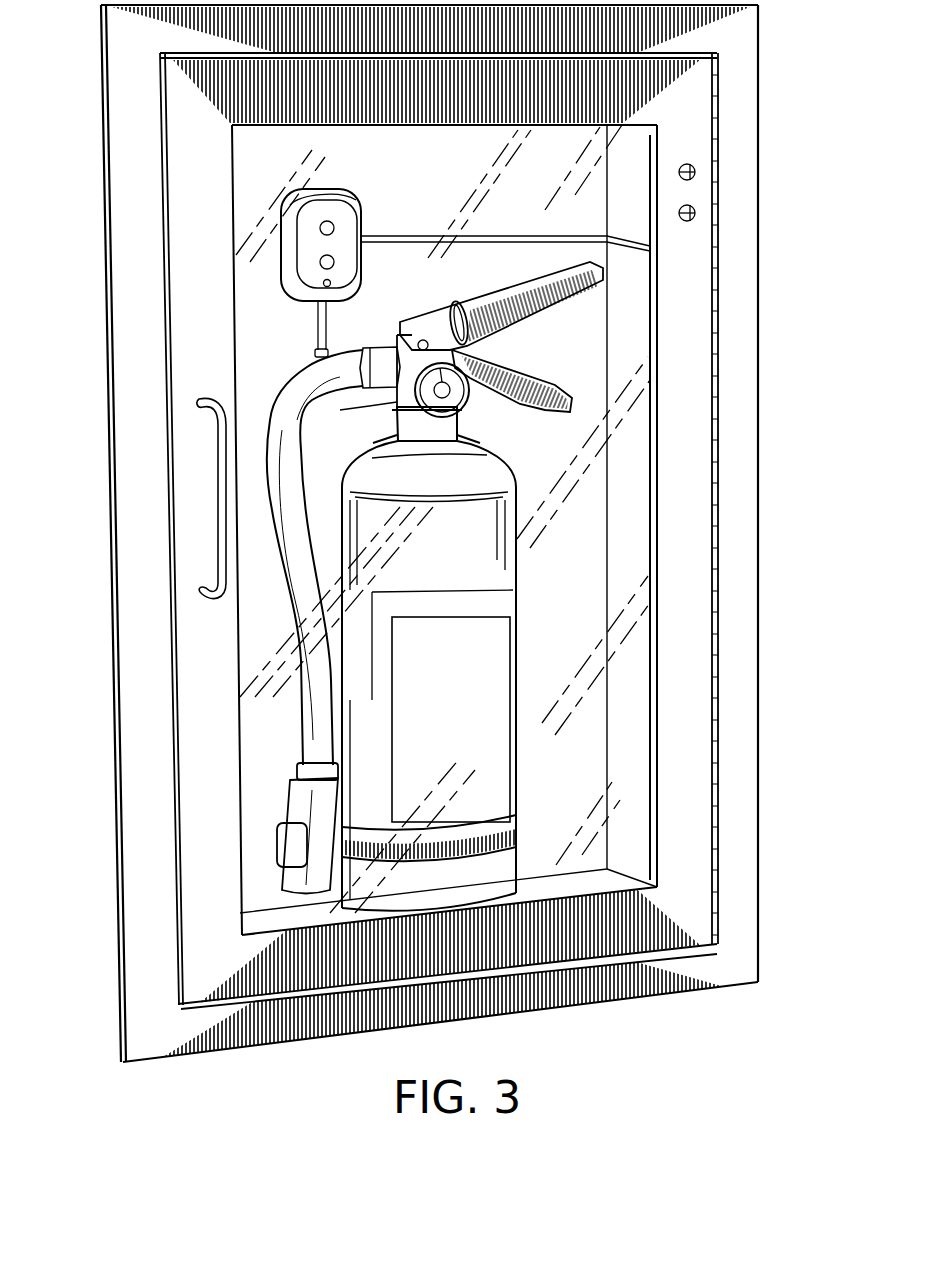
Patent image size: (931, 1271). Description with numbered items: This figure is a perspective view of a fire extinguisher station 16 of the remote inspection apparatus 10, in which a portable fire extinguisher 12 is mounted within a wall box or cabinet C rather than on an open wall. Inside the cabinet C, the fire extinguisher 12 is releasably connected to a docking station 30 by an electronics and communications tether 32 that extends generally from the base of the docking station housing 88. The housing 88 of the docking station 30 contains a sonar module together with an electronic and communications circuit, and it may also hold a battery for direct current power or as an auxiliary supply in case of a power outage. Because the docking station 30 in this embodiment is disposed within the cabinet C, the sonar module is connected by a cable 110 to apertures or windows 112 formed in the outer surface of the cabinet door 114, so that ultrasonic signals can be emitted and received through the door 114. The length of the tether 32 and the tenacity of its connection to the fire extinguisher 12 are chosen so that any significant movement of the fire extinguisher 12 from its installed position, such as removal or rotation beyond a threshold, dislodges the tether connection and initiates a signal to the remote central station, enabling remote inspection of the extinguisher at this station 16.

The remote inspection apparatus 10 is at (97, 970).
The portable fire extinguisher 12 is at (467, 468).
The fire extinguisher station 16 is at (584, 513).
The docking station 30 is at (313, 193).
The electronics and communications tether 32 is at (318, 323).
The housing 88 is at (363, 217).
The cable 110 is at (473, 238).
The apertures or windows 112 is at (696, 217).
The cabinet door 114 is at (687, 113).
The wall box or cabinet C is at (737, 843).